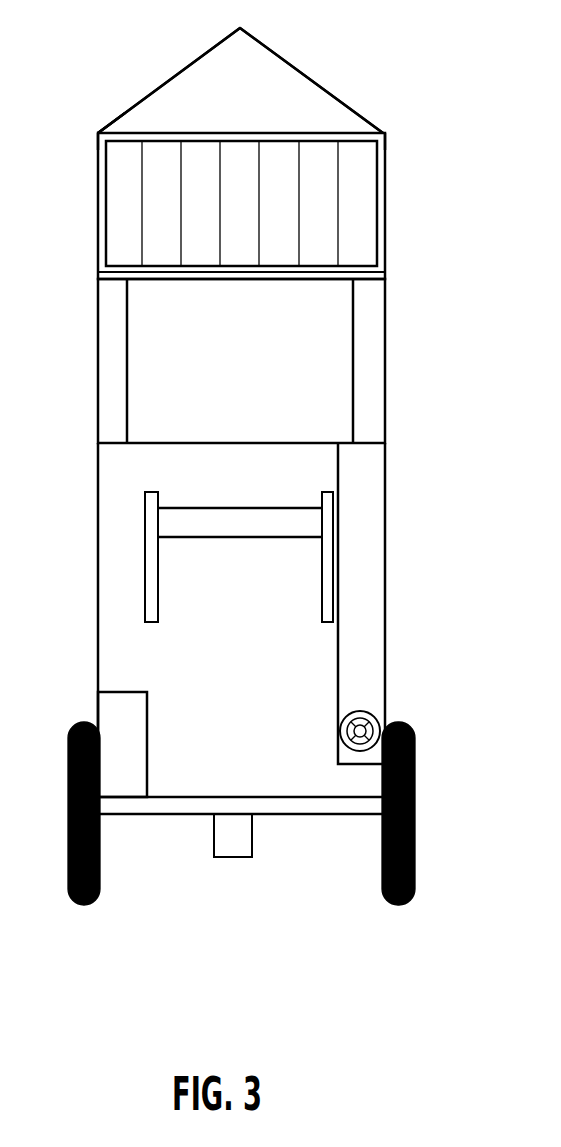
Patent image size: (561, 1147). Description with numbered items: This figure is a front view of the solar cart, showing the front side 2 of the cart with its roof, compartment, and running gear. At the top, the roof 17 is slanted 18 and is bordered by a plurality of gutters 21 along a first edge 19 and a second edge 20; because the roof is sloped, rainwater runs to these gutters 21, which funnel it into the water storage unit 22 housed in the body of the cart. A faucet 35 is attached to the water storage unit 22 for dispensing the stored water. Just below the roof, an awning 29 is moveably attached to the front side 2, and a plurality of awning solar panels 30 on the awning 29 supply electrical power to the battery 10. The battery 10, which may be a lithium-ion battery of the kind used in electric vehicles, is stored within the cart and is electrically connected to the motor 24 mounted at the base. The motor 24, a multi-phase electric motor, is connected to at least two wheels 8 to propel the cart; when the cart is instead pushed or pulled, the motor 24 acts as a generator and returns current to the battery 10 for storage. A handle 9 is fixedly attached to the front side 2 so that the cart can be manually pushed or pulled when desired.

The front side 2 is at (343, 330).
The wheels 8 is at (100, 861).
The handle 9 is at (143, 505).
The battery 10 is at (125, 725).
The roof 17 is at (265, 40).
The slant 18 is at (180, 58).
The first edge 19 is at (375, 122).
The second edge 20 is at (118, 124).
The gutters 21 is at (95, 150).
The water storage unit 22 is at (363, 517).
The motor 24 is at (226, 852).
The awning 29 is at (95, 227).
The awning solar panels 30 is at (370, 207).
The faucet 35 is at (335, 738).